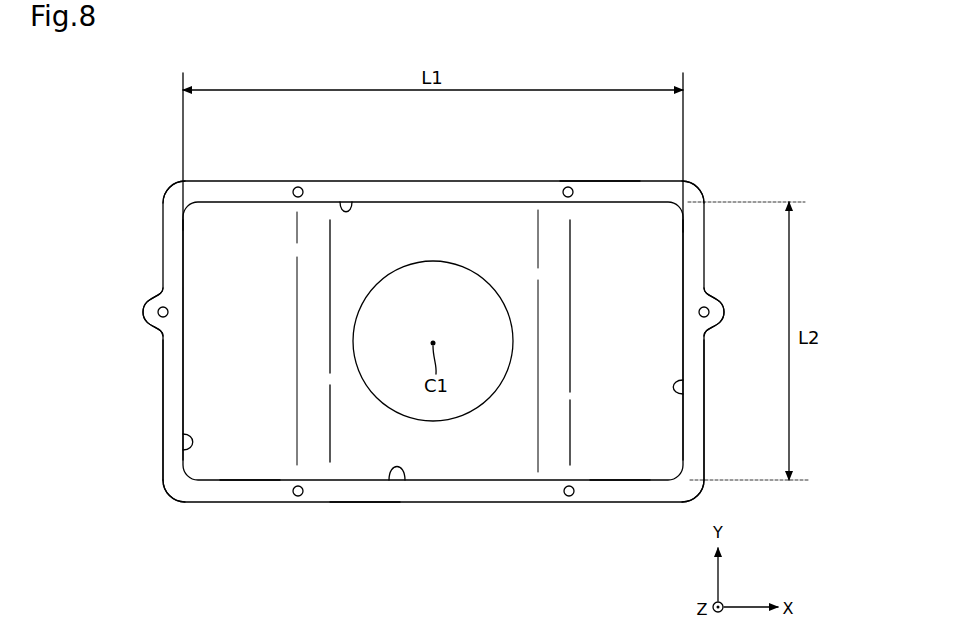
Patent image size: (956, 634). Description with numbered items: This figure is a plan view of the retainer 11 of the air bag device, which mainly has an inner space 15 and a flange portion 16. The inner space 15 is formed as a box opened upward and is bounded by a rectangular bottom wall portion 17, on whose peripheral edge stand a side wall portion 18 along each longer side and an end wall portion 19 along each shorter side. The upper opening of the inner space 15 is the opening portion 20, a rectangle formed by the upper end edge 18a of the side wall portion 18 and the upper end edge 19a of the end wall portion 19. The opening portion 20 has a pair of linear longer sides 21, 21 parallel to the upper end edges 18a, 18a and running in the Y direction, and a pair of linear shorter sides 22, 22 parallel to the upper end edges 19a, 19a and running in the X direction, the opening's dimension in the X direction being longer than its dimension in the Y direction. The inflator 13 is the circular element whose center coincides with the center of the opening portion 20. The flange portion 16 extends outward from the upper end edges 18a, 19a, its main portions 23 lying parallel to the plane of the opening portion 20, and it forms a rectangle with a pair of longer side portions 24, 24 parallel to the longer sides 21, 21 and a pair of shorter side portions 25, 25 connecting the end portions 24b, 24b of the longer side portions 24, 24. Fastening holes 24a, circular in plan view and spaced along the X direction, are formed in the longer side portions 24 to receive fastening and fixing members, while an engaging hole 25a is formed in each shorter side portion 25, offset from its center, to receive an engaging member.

The retainer 11 is at (687, 152).
The inflator 13 is at (440, 422).
The inner space 15 is at (500, 218).
The flange portion 16 is at (603, 181).
The bottom wall portion 17 is at (247, 460).
The side wall portion 18 is at (367, 364).
The upper end edge of the side wall portion 18a is at (346, 204).
The end wall portion 19 is at (358, 400).
The upper end edge of the end wall portion 19a is at (195, 446).
The opening portion 20 is at (618, 455).
The longer side 21 is at (447, 202).
The shorter side 22 is at (183, 365).
The main portion 23 is at (363, 492).
The longer side portion 24 is at (405, 191).
The fastening hole 24a is at (295, 187).
The end portion of the longer side portion 24b is at (175, 186).
The shorter side portion 25 is at (170, 418).
The engaging hole 25a is at (160, 322).